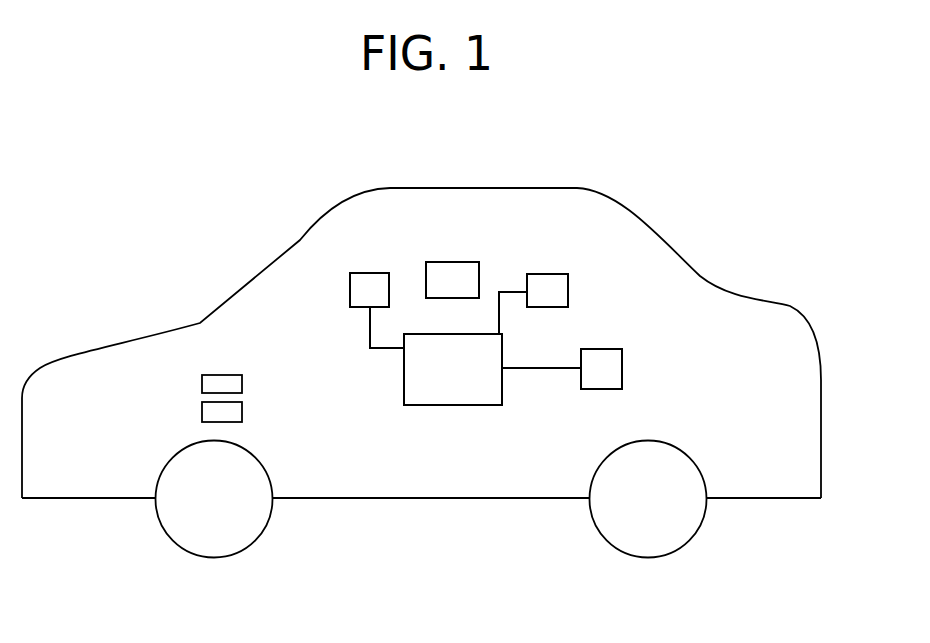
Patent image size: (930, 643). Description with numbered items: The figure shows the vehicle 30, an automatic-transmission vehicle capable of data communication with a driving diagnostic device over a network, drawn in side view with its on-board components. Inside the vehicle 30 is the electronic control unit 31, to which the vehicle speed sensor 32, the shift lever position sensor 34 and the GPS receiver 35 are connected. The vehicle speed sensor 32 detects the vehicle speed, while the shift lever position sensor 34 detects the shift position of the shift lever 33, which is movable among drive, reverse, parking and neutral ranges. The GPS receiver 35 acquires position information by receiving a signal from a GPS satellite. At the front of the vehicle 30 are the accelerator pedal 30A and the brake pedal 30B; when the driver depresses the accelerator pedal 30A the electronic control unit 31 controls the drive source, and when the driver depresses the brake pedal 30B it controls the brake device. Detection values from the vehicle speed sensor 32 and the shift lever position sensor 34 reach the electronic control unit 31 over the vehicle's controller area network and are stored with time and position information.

The vehicle 30 is at (710, 233).
The accelerator pedal 30A is at (197, 413).
The brake pedal 30B is at (200, 386).
The electronic control unit 31 is at (445, 406).
The vehicle speed sensor 32 is at (370, 272).
The shift lever 33 is at (455, 262).
The shift lever position sensor 34 is at (553, 273).
The GPS receiver 35 is at (624, 368).